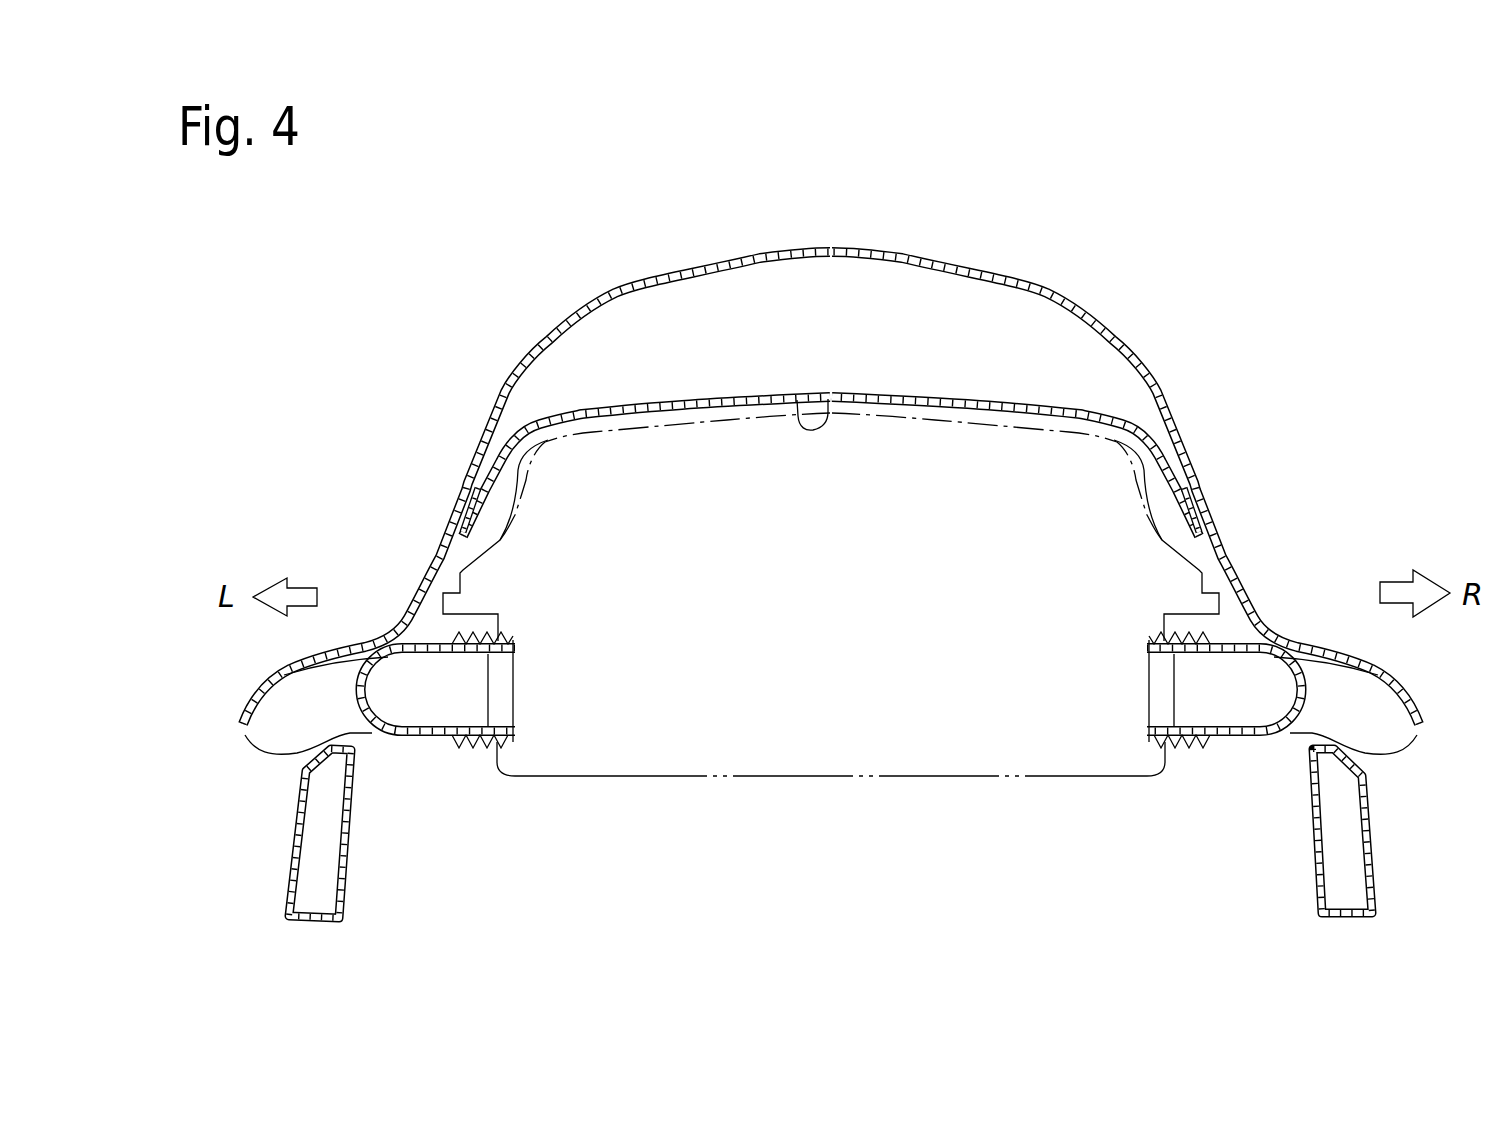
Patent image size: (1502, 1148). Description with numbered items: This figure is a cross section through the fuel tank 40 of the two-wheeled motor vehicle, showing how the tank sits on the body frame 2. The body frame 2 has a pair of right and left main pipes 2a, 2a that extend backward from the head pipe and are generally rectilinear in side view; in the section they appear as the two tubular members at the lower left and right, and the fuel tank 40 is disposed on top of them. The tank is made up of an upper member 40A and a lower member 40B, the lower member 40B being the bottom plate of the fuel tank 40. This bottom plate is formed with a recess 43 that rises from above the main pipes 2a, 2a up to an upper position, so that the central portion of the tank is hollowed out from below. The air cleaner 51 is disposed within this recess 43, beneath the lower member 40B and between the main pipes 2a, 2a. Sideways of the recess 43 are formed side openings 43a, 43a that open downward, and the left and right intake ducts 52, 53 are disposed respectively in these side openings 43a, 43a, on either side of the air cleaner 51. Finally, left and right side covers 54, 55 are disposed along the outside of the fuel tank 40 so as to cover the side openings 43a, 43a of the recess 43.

The fuel tank 40 is at (831, 425).
The upper member 40A is at (959, 244).
The lower member 40B is at (980, 379).
The recess 43 is at (797, 412).
The side openings 43a is at (462, 535).
The air cleaner 51 is at (1087, 422).
The left intake duct 52 is at (411, 634).
The right intake duct 53 is at (1252, 648).
The left side cover 54 is at (423, 578).
The right side cover 55 is at (1238, 572).
The body frame 2 is at (1394, 821).
The main pipe 2a is at (290, 838).